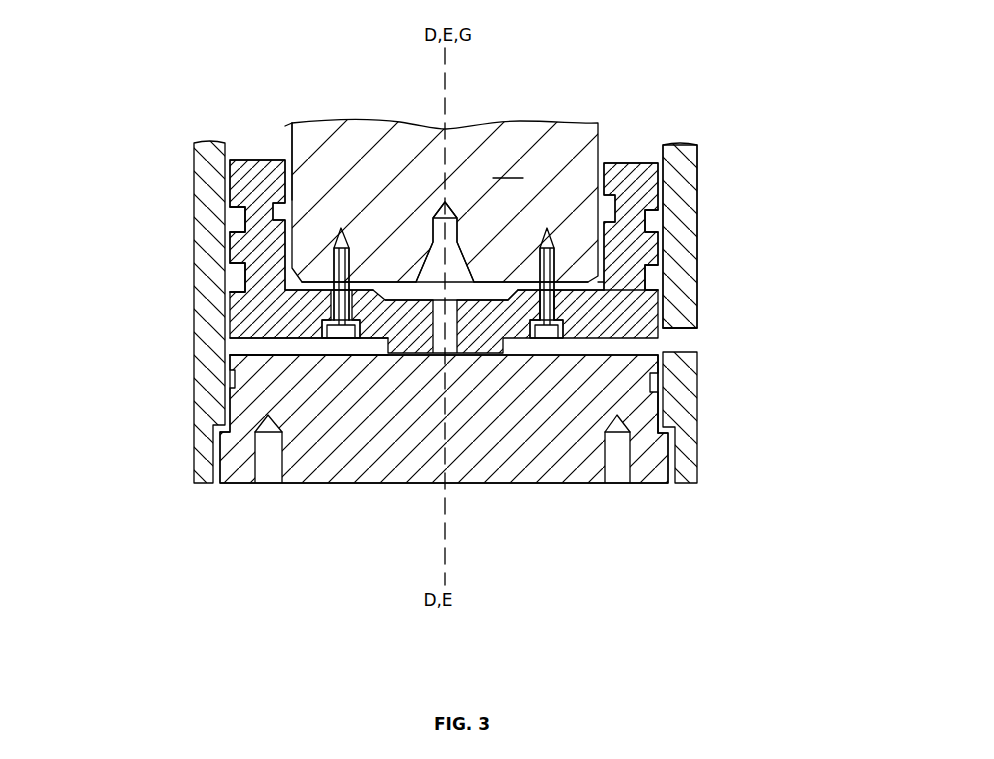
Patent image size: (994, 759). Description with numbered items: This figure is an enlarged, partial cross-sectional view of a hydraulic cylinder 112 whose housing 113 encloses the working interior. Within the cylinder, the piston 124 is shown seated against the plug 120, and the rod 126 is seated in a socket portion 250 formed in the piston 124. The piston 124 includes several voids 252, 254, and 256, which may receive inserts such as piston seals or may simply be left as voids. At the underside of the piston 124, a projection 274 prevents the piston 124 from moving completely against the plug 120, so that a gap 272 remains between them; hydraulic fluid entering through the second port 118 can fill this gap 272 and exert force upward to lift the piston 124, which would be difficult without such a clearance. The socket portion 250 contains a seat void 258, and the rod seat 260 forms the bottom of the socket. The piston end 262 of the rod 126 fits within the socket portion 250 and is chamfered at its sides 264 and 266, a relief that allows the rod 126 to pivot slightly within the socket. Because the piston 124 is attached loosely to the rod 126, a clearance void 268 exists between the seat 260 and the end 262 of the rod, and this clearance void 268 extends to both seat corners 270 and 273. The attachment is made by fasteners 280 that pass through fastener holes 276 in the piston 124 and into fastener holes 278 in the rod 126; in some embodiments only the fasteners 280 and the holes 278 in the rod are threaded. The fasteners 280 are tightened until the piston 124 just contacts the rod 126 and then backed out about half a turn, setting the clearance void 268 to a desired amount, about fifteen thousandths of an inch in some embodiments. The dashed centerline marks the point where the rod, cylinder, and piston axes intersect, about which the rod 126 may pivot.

The hydraulic cylinder 112 is at (806, 198).
The housing 113 is at (697, 177).
The second port 118 is at (695, 338).
The plug 120 is at (450, 452).
The piston 124 is at (693, 313).
The rod 126 is at (441, 200).
The socket portion 250 is at (610, 142).
The void 252 is at (278, 198).
The void 254 is at (236, 220).
The void 256 is at (234, 278).
The seat void 258 is at (520, 302).
The rod seat 260 is at (600, 302).
The piston end 262 is at (343, 210).
The chamfered side 264 is at (606, 286).
The chamfered side 266 is at (352, 292).
The clearance void 268 is at (295, 358).
The seat corner 270 is at (664, 328).
The gap 272 is at (251, 345).
The seat corner 273 is at (290, 300).
The projection 274 is at (484, 292).
The fastener hole 276 is at (351, 314).
The fastener hole 278 is at (338, 225).
The fastener 280 is at (323, 342).